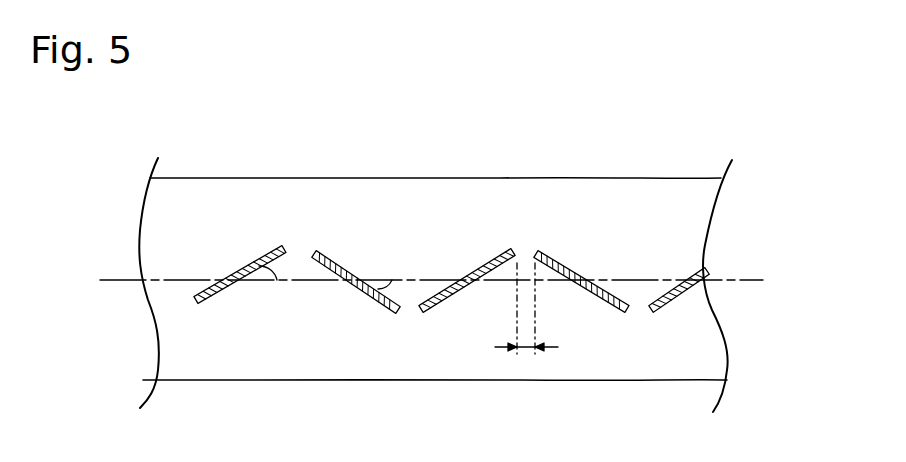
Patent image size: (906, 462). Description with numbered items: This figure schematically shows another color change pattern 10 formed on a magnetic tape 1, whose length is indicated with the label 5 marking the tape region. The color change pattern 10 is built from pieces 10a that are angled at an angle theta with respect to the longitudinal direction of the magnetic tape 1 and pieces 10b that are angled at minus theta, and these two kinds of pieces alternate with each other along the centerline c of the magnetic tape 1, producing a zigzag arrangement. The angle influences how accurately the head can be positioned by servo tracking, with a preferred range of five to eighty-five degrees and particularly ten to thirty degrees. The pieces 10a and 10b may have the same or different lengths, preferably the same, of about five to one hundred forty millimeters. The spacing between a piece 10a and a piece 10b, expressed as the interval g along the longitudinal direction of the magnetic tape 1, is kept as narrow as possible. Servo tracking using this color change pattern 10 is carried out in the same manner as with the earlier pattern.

The magnetic tape 1 is at (674, 165).
The tube wall / flow passage 5 is at (163, 225).
The color change pattern 10 is at (363, 185).
The pieces angled at θ° 10a is at (258, 261).
The pieces angled at −θ° 10b is at (337, 265).
The centerline c is at (742, 279).
The interval g is at (526, 318).